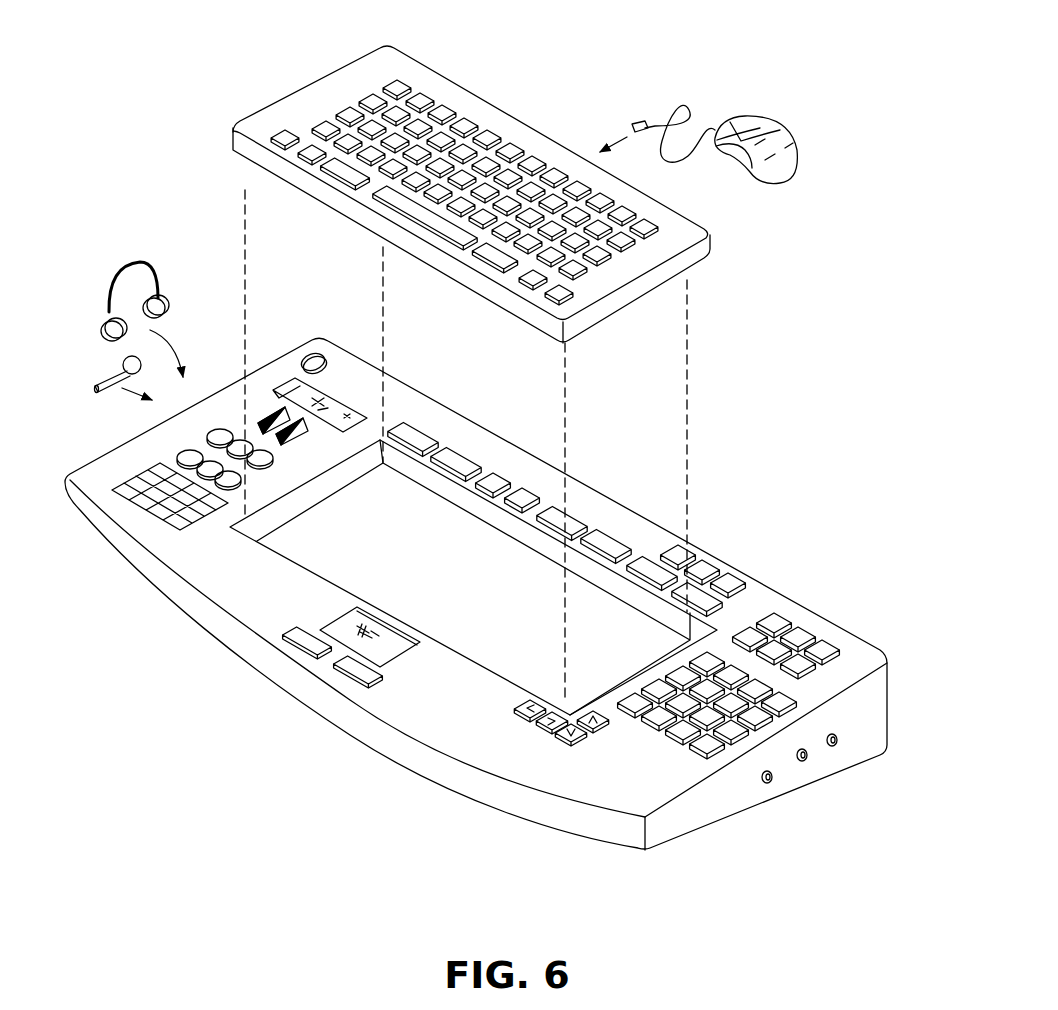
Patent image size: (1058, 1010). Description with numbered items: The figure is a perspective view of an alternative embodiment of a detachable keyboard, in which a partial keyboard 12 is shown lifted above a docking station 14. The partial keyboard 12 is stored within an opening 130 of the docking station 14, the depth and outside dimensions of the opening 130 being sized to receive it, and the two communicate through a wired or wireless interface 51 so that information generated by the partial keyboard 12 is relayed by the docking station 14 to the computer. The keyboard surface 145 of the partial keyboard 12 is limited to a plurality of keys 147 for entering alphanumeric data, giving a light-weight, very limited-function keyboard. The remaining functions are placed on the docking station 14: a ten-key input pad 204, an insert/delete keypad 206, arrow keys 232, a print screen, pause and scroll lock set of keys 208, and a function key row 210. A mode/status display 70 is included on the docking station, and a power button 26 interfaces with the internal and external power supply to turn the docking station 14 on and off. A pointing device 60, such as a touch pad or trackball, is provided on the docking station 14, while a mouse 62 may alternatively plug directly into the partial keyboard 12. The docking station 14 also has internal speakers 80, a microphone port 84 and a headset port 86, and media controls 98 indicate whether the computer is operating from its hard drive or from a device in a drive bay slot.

The partial keyboard 12 is at (246, 93).
The keyboard surface 145 is at (364, 69).
The keys 147 is at (440, 109).
The mouse 62 is at (771, 132).
The headset port 86 is at (137, 263).
The microphone port 84 is at (117, 370).
The docking station 14 is at (176, 639).
The power button 26 is at (315, 352).
The mode/status display 70 is at (338, 404).
The media controls 98 is at (165, 498).
The interface 51 is at (582, 497).
The opening 130 is at (507, 648).
The function key row 210 is at (452, 447).
The print screen, pause, scroll lock set of keys 208 is at (703, 566).
The insert/delete keypad 206 is at (798, 633).
The ten-key input pad 204 is at (703, 713).
The arrow keys 232 is at (543, 723).
The pointing device 60 is at (350, 640).
The internal speakers 80 is at (807, 757).